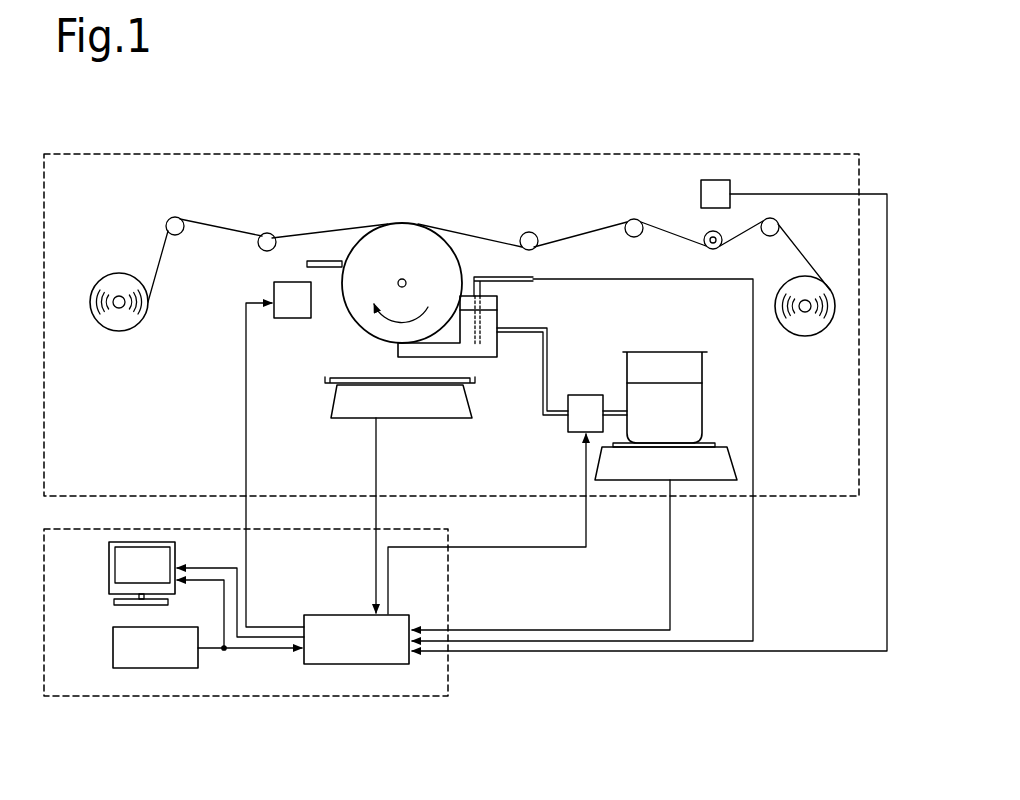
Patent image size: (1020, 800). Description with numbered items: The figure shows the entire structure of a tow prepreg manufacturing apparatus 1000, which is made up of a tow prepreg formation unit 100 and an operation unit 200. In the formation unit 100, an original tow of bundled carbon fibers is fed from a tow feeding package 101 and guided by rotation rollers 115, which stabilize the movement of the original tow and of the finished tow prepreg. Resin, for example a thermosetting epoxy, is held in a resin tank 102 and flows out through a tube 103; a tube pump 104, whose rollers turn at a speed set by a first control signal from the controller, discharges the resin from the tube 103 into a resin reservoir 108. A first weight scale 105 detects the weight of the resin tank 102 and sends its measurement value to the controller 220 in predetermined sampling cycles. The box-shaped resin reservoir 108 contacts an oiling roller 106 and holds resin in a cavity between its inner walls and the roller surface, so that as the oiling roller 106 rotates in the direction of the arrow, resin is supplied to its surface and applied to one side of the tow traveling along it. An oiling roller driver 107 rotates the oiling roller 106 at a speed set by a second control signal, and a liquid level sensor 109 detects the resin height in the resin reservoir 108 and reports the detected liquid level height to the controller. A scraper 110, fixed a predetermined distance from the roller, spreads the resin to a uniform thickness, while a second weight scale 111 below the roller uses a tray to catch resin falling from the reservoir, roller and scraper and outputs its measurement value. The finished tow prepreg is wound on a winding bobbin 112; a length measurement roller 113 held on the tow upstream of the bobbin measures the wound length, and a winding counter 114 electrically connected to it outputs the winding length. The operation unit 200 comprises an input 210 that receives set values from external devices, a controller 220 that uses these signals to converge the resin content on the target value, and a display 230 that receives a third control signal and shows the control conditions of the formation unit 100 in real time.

The tow prepreg manufacturing apparatus 1000 is at (466, 136).
The tow prepreg formation unit 100 is at (233, 153).
The tow feeding package 101 is at (108, 324).
The resin tank 102 is at (673, 351).
The tube 103 is at (552, 345).
The tube pump 104 is at (586, 395).
The first weight scale 105 is at (713, 443).
The oiling roller 106 is at (405, 242).
The oiling roller driver 107 is at (274, 282).
The resin reservoir 108 is at (410, 369).
The liquid level sensor 109 is at (533, 282).
The scraper 110 is at (343, 260).
The second weight scale 111 is at (440, 418).
The winding bobbin 112 is at (805, 328).
The length measurement roller 113 is at (704, 247).
The winding counter 114 is at (701, 194).
The rotation rollers 115 is at (176, 217).
The operation unit 200 is at (450, 693).
The input 210 is at (113, 645).
The controller 220 is at (330, 614).
The display 230 is at (109, 562).